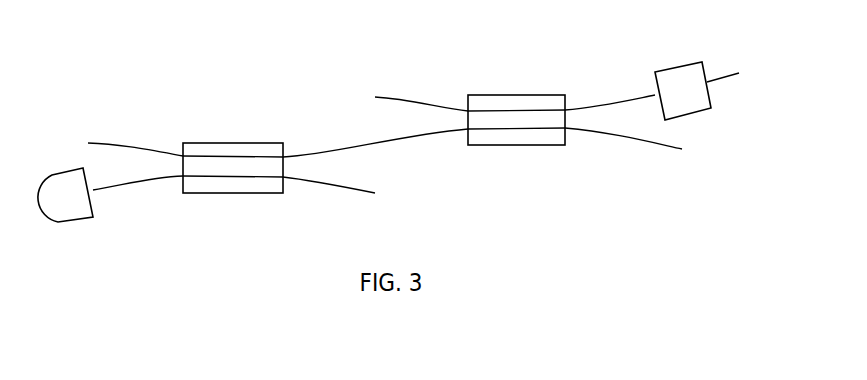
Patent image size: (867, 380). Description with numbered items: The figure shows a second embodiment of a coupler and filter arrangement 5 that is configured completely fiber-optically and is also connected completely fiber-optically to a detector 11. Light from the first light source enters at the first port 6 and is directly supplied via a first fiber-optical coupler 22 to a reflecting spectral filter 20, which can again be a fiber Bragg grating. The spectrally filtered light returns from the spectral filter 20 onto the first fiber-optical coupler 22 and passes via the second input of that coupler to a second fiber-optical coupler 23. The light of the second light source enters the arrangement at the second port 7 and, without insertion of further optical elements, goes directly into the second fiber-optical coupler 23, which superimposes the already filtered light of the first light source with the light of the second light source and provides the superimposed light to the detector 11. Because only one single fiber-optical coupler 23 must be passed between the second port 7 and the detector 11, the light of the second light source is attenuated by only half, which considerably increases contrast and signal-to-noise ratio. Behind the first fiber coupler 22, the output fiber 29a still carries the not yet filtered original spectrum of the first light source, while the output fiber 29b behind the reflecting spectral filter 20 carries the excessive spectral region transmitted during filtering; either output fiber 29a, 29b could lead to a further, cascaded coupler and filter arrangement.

The coupler and filter arrangement 5 is at (116, 88).
The first connection or port 6 is at (383, 91).
The second port 7 is at (374, 199).
The detector 11 is at (58, 209).
The reflecting spectral filter 20 is at (673, 102).
The first fiber-optical coupler 22 is at (533, 95).
The second fiber-optical coupler 23 is at (248, 143).
The output fiber 29a is at (642, 144).
The output fiber 29b is at (722, 75).